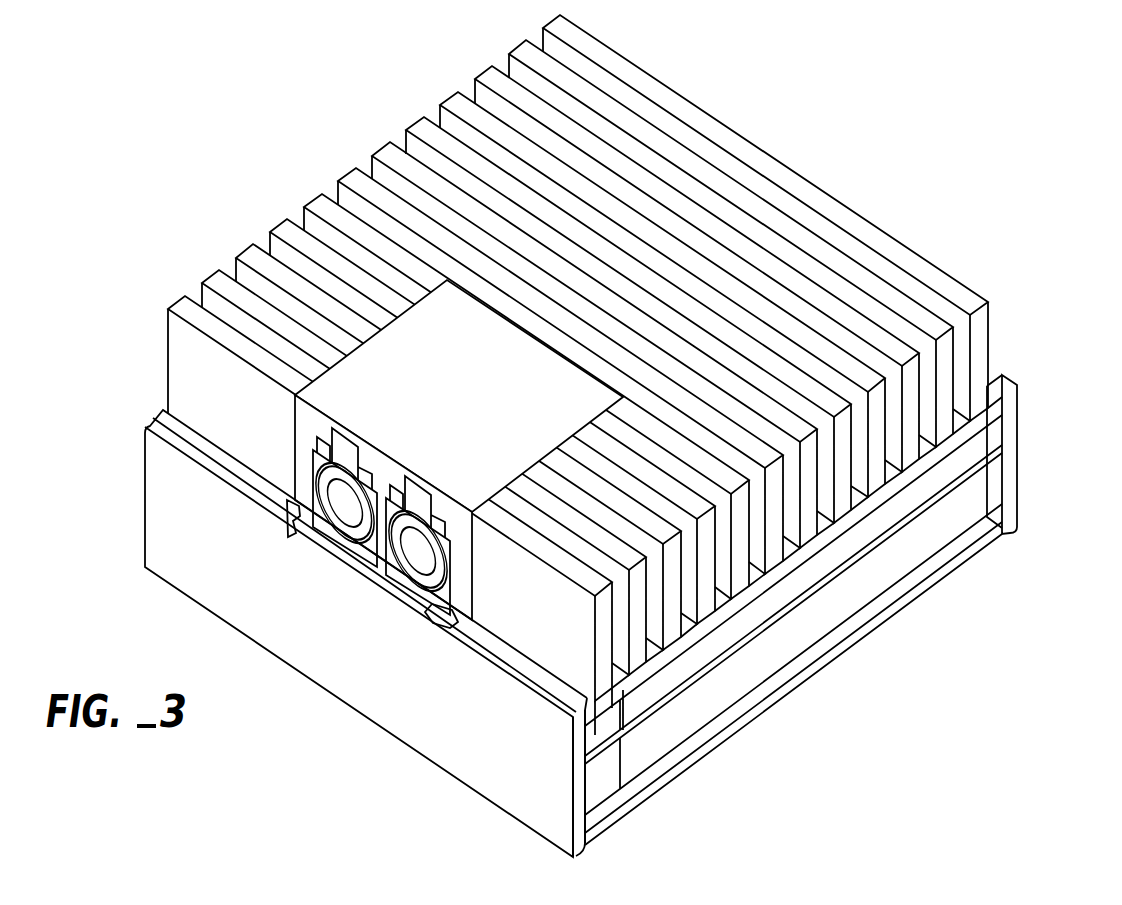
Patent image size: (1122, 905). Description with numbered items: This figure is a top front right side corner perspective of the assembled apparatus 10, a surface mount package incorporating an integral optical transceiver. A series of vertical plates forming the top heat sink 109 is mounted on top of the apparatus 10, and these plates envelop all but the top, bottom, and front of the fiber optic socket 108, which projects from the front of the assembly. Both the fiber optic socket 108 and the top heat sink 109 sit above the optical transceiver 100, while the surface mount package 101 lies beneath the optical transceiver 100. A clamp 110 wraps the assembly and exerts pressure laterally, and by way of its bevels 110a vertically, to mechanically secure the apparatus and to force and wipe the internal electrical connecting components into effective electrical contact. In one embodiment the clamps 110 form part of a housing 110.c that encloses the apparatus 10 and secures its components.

The apparatus 10 is at (237, 109).
The top heat sink 109 is at (752, 200).
The fiber optic socket 108 is at (460, 424).
The clamp 110 is at (368, 648).
The bevels 110a is at (530, 668).
The housing 110.c is at (601, 891).
The optical transceiver 100 is at (820, 565).
The surface mount package 101 is at (772, 660).